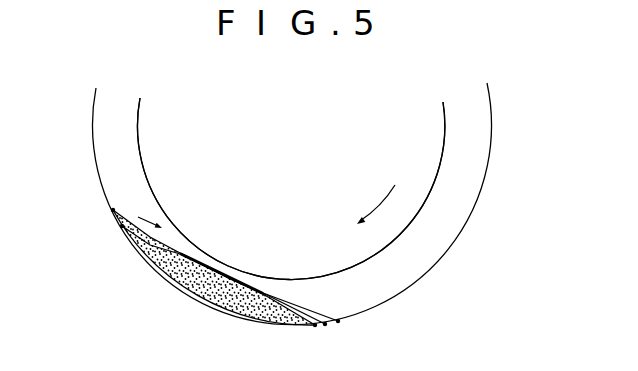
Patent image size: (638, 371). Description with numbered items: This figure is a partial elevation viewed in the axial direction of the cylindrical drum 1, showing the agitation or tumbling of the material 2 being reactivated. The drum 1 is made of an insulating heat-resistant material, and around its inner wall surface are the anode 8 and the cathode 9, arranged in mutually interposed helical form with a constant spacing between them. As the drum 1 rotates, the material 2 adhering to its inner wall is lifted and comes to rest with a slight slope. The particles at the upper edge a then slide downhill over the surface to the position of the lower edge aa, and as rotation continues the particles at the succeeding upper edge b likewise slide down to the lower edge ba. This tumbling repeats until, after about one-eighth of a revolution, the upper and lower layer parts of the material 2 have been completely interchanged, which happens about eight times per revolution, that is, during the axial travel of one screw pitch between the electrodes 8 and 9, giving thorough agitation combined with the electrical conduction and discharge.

The cylindrical drum 1 is at (479, 195).
The material 2 is at (200, 294).
The anode 8 is at (477, 140).
The cathode 9 is at (477, 140).
The upper edge a is at (113, 210).
The succeeding upper edge b is at (122, 226).
The lower edge aa is at (315, 326).
The lower edge ba is at (331, 322).